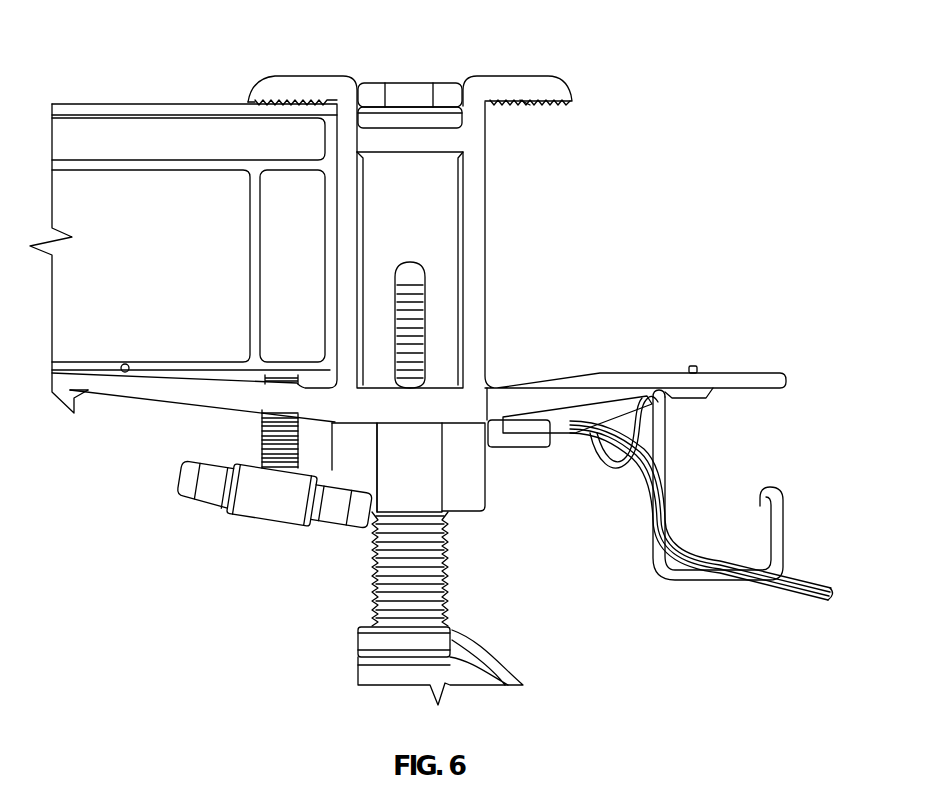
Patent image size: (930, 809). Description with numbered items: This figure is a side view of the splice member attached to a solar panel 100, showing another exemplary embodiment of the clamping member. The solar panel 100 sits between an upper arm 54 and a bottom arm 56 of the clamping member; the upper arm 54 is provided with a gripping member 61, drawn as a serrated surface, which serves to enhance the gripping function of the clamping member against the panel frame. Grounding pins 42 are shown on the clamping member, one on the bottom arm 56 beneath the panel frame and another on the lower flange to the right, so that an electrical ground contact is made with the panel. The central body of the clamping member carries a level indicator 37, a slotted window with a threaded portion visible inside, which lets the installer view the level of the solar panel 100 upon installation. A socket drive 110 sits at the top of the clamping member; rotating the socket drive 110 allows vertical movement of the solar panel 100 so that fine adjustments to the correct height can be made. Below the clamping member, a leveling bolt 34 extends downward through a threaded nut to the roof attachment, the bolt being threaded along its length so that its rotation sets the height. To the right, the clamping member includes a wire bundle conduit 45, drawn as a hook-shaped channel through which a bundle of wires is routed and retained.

The solar panel 100 is at (170, 104).
The upper arm 54 is at (297, 77).
The socket drive 110 is at (412, 82).
The gripping member 61 is at (530, 105).
The level indicator 37 is at (445, 318).
The grounding pin 42 is at (692, 366).
The bottom arm 56 is at (178, 387).
The wire bundle conduit 45 is at (776, 512).
The leveling bolt 34 is at (450, 575).